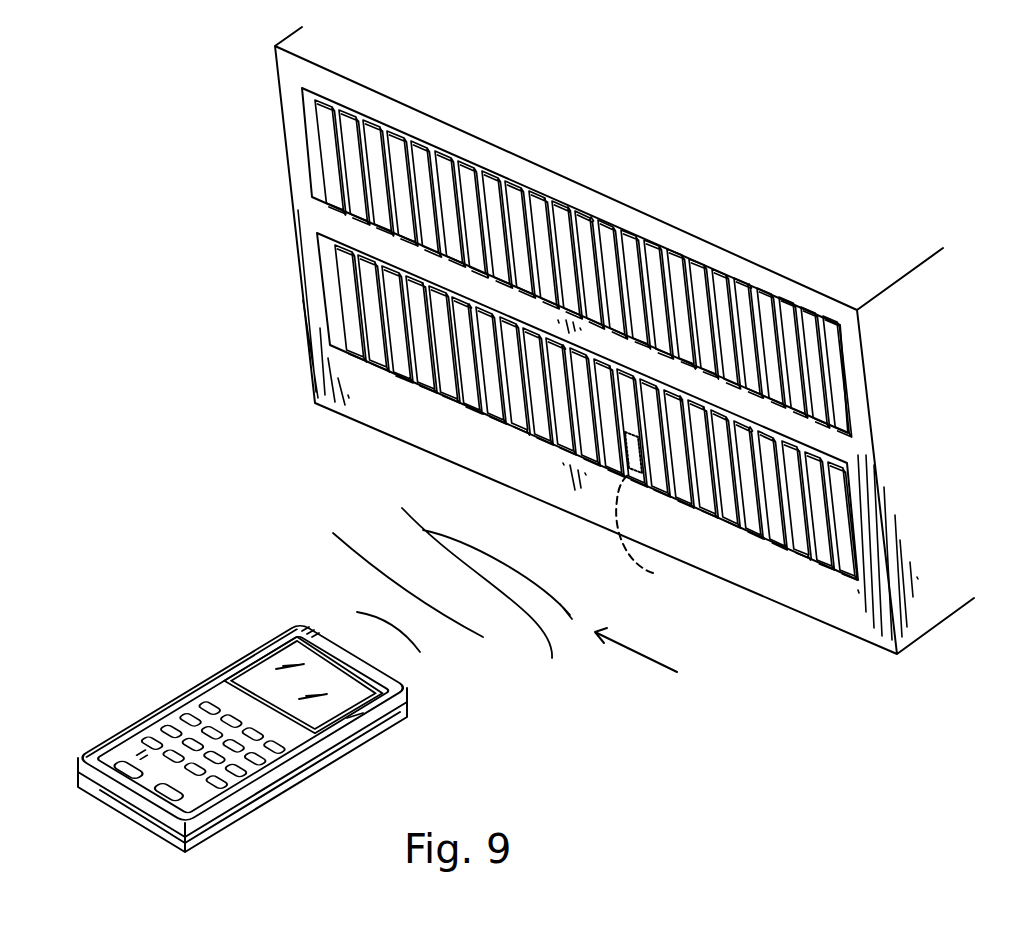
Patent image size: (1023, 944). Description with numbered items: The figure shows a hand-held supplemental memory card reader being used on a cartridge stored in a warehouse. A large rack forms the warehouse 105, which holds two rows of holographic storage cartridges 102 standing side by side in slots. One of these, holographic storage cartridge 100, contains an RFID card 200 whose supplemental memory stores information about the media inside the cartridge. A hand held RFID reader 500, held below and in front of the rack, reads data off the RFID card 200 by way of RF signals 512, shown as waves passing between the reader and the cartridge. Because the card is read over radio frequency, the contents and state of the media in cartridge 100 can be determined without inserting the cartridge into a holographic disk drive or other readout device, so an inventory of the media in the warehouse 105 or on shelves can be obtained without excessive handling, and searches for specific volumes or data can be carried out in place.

The warehouse 105 is at (283, 118).
The holographic storage cartridges 102 is at (800, 303).
The holographic storage cartridge 100 is at (628, 477).
The RFID card 200 is at (663, 535).
The RF signals 512 is at (664, 663).
The hand held RFID reader 500 is at (390, 728).